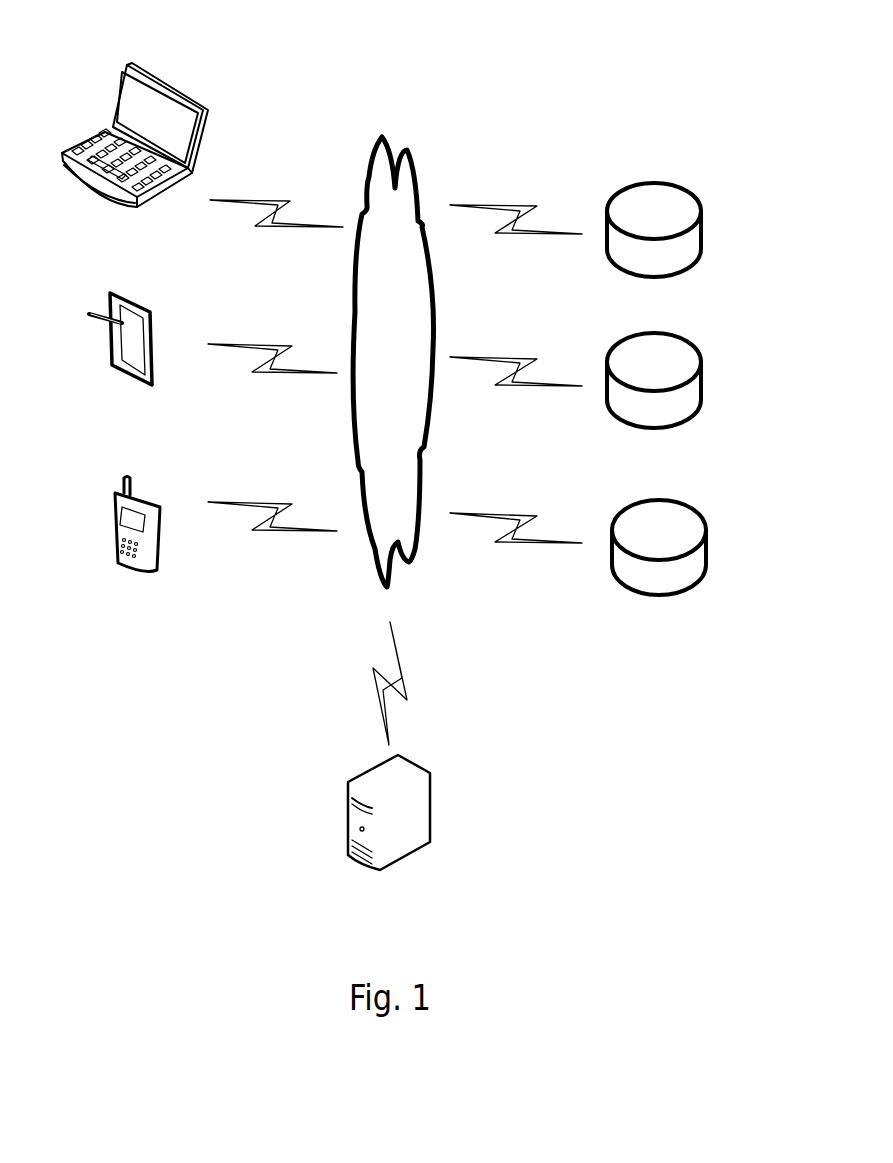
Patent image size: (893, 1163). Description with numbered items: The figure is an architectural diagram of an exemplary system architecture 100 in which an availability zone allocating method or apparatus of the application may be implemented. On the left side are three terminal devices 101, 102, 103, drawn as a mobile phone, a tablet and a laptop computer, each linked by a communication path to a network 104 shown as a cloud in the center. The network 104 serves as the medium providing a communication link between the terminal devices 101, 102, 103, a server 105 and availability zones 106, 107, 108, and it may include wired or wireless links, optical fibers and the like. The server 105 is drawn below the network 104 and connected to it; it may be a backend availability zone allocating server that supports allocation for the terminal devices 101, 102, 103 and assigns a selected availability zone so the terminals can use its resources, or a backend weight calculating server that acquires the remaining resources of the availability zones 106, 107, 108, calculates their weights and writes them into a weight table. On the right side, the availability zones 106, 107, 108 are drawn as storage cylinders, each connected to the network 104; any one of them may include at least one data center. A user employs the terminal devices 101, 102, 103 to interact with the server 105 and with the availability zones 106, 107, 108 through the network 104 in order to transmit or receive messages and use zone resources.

The system architecture 100 is at (681, 47).
The terminal device 101 is at (137, 546).
The terminal device 102 is at (120, 360).
The terminal device 103 is at (135, 156).
The network 104 is at (393, 362).
The server 105 is at (389, 836).
The availability zone 106 is at (654, 251).
The availability zone 107 is at (654, 402).
The availability zone 108 is at (659, 568).